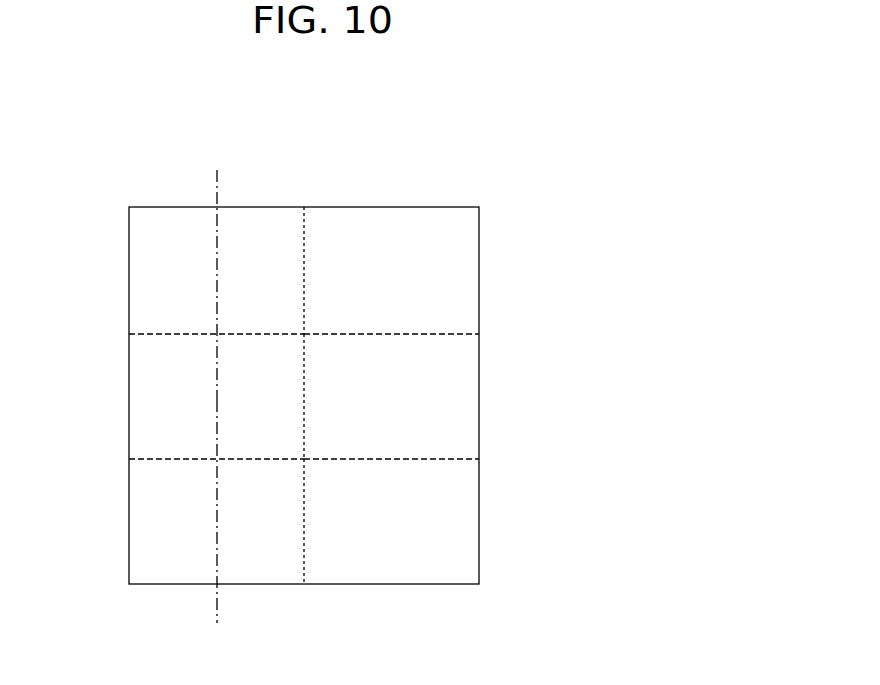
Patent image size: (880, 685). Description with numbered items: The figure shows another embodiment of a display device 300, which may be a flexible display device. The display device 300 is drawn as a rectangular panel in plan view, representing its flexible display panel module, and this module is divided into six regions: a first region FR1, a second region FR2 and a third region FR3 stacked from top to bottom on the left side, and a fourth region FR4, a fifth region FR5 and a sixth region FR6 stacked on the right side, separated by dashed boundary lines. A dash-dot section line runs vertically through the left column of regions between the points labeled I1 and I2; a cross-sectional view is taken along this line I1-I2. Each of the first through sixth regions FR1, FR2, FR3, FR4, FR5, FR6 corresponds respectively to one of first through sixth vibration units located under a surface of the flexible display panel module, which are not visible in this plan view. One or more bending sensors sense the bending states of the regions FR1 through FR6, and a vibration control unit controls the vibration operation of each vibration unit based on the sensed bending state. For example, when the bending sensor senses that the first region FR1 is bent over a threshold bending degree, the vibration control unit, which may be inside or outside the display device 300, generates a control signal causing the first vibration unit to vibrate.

The display device 300 is at (388, 172).
The line I1-I2 endpoint I1 is at (217, 271).
The line I1-I2 endpoint I2 is at (217, 525).
The first region FR1 is at (140, 272).
The second region FR2 is at (140, 402).
The third region FR3 is at (140, 525).
The fourth region FR4 is at (470, 272).
The fifth region FR5 is at (470, 402).
The sixth region FR6 is at (470, 525).